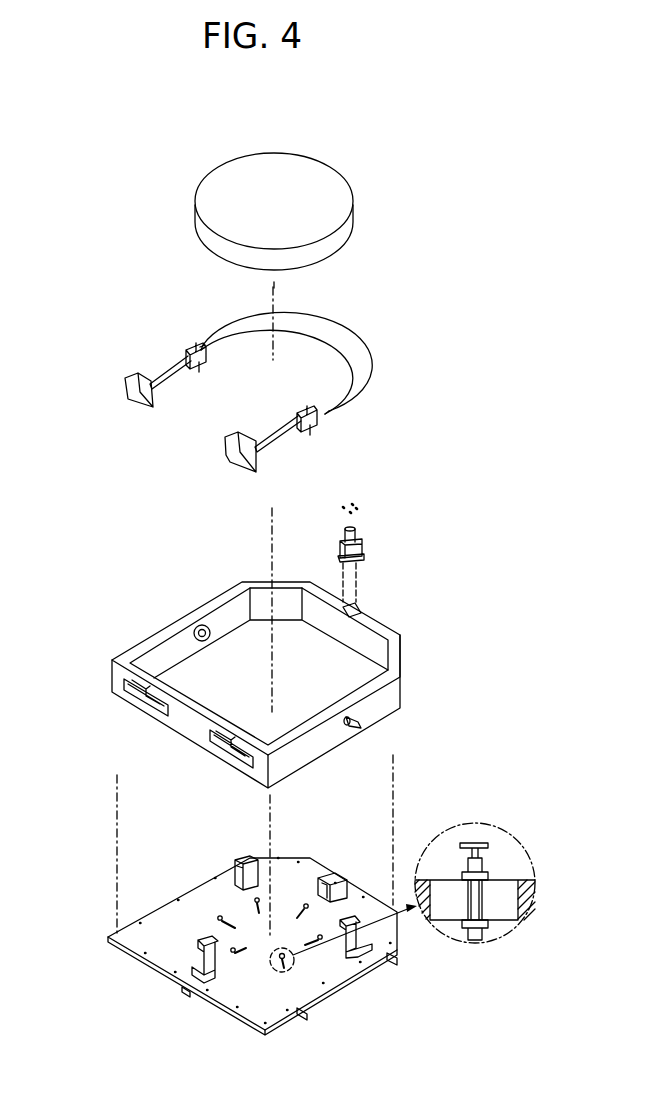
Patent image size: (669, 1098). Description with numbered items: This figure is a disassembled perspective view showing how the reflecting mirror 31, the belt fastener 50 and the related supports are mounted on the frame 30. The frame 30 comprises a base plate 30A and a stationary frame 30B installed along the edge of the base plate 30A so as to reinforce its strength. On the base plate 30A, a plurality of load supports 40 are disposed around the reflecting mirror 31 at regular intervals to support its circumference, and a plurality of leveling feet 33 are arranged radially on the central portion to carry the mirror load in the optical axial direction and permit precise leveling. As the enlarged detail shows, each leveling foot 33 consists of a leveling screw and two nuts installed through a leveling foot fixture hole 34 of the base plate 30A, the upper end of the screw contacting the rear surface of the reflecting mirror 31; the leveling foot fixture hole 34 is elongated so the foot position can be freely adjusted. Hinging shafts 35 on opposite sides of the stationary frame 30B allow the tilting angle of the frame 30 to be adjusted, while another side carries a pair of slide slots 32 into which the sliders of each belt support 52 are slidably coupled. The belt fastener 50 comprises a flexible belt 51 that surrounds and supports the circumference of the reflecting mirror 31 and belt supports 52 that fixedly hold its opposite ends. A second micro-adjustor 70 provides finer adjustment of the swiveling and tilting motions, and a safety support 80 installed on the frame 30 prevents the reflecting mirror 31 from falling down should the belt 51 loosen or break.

The frame 30 is at (237, 670).
The base plate 30A is at (258, 915).
The stationary frame 30B is at (112, 664).
The reflecting mirror 31 is at (338, 190).
The slide slot 32 is at (218, 748).
The leveling foot 33 is at (507, 892).
The leveling foot fixture hole 34 is at (513, 903).
The hinging shaft 35 is at (363, 720).
The load support 40 is at (184, 953).
The belt fastener 50 is at (287, 386).
The belt 51 is at (347, 397).
The belt support 52 is at (152, 353).
The second micro-adjustor 70 is at (378, 540).
The safety support 80 is at (335, 863).